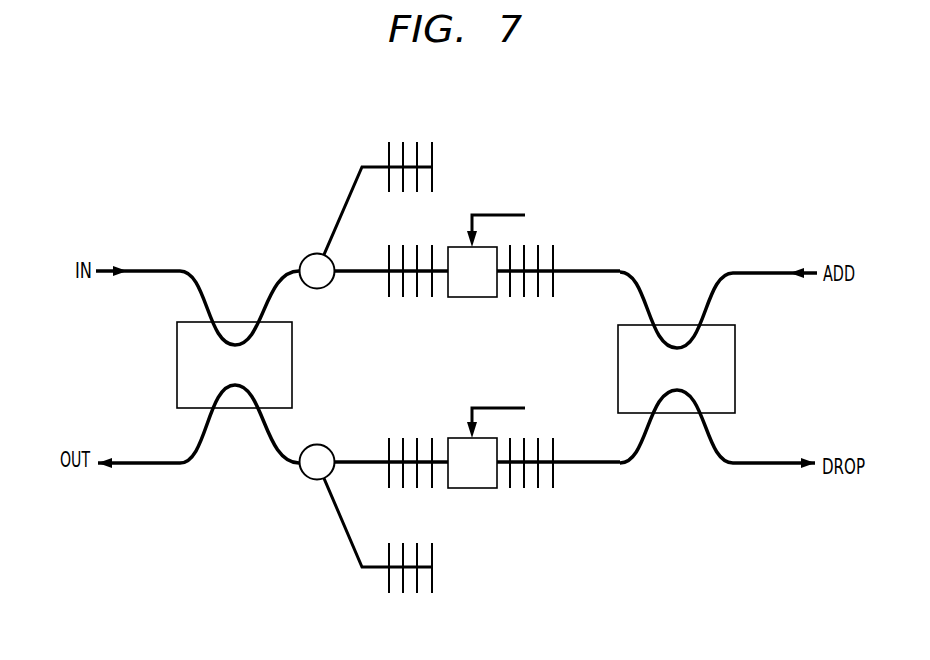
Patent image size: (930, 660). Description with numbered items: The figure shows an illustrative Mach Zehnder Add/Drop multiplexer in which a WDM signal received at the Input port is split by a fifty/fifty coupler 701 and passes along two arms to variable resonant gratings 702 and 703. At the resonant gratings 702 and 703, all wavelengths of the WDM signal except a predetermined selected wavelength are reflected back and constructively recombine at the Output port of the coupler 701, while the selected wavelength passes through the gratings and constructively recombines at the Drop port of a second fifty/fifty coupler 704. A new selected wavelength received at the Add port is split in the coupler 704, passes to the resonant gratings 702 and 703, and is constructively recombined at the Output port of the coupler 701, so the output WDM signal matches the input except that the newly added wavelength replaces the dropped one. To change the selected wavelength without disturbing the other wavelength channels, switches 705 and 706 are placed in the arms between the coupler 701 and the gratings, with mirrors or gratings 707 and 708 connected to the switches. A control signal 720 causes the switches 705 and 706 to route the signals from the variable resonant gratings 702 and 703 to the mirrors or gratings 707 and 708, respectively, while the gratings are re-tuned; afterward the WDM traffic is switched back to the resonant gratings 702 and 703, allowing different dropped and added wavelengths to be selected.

The 50/50 coupler 701 is at (177, 364).
The variable resonant grating 702 is at (558, 309).
The variable resonant grating 703 is at (558, 500).
The 50/50 coupler 704 is at (735, 370).
The switch 705 is at (307, 256).
The switch 706 is at (306, 477).
The mirror or grating 707 is at (378, 180).
The mirror or grating 708 is at (378, 550).
The control signal 720 is at (512, 321).